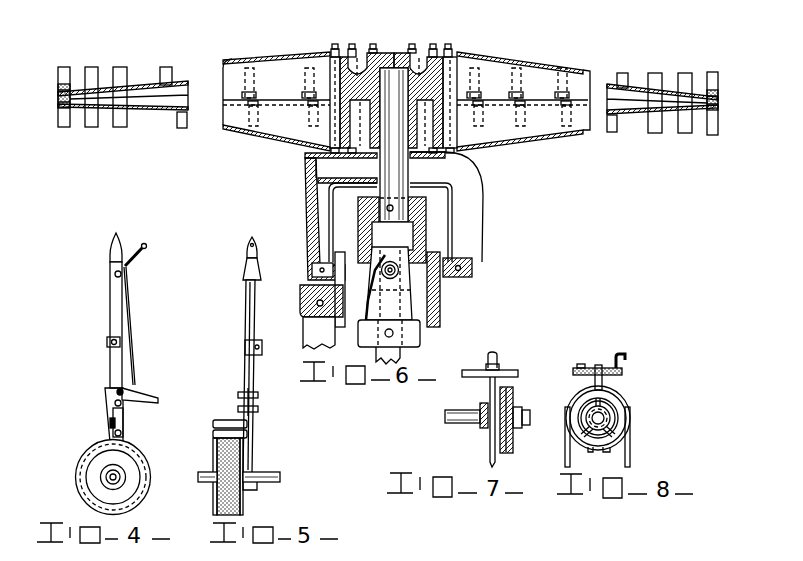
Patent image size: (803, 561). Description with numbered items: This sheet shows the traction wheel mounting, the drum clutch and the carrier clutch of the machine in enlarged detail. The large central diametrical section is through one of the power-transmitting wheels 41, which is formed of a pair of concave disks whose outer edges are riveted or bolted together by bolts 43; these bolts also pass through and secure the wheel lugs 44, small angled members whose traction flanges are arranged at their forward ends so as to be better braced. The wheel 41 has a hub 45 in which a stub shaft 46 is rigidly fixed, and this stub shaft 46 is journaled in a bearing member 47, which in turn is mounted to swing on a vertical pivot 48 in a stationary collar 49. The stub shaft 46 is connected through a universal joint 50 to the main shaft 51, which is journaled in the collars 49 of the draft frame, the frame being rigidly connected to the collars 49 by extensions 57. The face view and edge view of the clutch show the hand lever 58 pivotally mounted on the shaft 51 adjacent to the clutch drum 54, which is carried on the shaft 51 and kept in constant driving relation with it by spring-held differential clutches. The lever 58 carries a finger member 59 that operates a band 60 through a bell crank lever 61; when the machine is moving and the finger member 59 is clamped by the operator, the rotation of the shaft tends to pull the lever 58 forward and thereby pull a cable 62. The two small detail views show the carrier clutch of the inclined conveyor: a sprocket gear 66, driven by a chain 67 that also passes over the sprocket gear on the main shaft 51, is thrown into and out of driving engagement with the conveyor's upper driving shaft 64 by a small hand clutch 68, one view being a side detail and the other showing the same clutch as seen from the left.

In FIG. 6, the wheel 41 is at (566, 135).
In FIG. 6, the bolt 43 is at (60, 90).
In FIG. 6, the wheel lug 44 is at (162, 70).
In FIG. 6, the hub 45 is at (367, 62).
In FIG. 6, the stub shaft 46 is at (392, 80).
In FIG. 6, the bearing member 47 is at (470, 190).
In FIG. 6, the vertical pivot 48 is at (313, 266).
In FIG. 6, the stationary collar 49 is at (440, 312).
In FIG. 6, the universal joint 50 is at (397, 276).
In FIG. 6, the main shaft 51 is at (400, 354).
In FIG. 4, the main shaft 51 is at (120, 473).
In FIG. 5, the main shaft 51 is at (276, 476).
In FIG. 4, the clutch drum 54 is at (93, 485).
In FIG. 5, the clutch drum 54 is at (215, 492).
In FIG. 6, the extension 57 is at (312, 334).
In FIG. 4, the hand lever 58 is at (116, 366).
In FIG. 5, the hand lever 58 is at (253, 312).
In FIG. 4, the finger member 59 is at (146, 248).
In FIG. 5, the finger member 59 is at (255, 250).
In FIG. 4, the band 60 is at (110, 436).
In FIG. 5, the band 60 is at (232, 460).
In FIG. 4, the bell crank lever 61 is at (124, 406).
In FIG. 5, the bell crank lever 61 is at (246, 416).
In FIG. 4, the cable 62 is at (156, 397).
In FIG. 5, the cable 62 is at (250, 410).
In FIG. 7, the upper driving shaft 64 is at (462, 426).
In FIG. 8, the upper driving shaft 64 is at (600, 418).
In FIG. 7, the sprocket gear 66 is at (512, 393).
In FIG. 8, the sprocket gear 66 is at (615, 432).
In FIG. 7, the chain 67 is at (506, 455).
In FIG. 8, the chain 67 is at (624, 459).
In FIG. 7, the hand clutch 68 is at (498, 364).
In FIG. 8, the hand clutch 68 is at (612, 388).